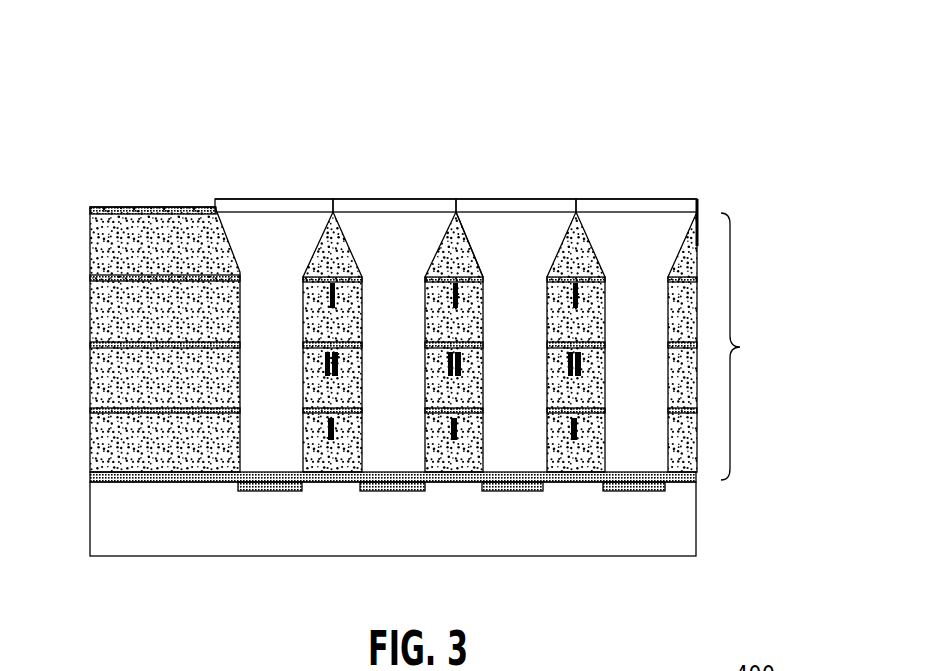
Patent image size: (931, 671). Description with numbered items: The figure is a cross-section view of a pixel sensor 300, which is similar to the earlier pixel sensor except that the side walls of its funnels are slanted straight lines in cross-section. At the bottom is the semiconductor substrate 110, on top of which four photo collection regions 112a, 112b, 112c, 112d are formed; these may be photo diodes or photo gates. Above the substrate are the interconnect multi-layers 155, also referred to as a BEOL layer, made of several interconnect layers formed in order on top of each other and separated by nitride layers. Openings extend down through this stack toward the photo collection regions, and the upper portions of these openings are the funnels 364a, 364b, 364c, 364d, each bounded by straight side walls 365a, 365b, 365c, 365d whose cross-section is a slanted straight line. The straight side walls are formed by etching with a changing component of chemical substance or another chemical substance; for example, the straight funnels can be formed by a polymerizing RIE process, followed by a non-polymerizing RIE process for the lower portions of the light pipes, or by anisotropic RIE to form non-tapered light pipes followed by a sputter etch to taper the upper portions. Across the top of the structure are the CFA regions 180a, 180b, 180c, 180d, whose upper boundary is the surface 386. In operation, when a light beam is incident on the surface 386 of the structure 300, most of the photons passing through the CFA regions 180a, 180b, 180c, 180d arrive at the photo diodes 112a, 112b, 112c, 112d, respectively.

The pixel sensor 300 is at (668, 104).
The semiconductor substrate 110 is at (108, 525).
The photo collection region 112a is at (278, 491).
The photo collection region 112b is at (393, 491).
The photo collection region 112c is at (513, 491).
The photo collection region 112d is at (637, 491).
The interconnect multi-layers 155 is at (437, 343).
The CFA region 180a is at (295, 204).
The CFA region 180b is at (393, 207).
The CFA region 180c is at (522, 208).
The CFA region 180d is at (670, 209).
The funnel 364a is at (297, 281).
The funnel 364b is at (418, 281).
The funnel 364c is at (538, 281).
The funnel 364d is at (660, 281).
The side wall 365a is at (318, 245).
The side wall 365b is at (443, 233).
The side wall 365c is at (475, 252).
The side wall 365d is at (593, 243).
The surface 386 is at (237, 197).